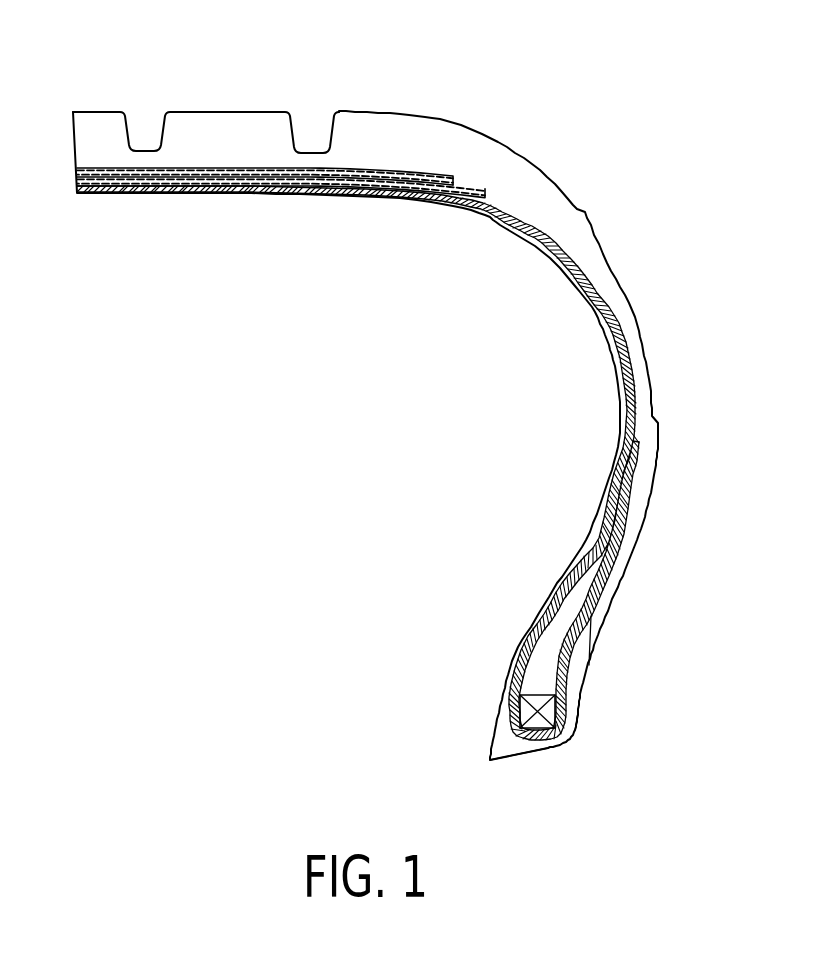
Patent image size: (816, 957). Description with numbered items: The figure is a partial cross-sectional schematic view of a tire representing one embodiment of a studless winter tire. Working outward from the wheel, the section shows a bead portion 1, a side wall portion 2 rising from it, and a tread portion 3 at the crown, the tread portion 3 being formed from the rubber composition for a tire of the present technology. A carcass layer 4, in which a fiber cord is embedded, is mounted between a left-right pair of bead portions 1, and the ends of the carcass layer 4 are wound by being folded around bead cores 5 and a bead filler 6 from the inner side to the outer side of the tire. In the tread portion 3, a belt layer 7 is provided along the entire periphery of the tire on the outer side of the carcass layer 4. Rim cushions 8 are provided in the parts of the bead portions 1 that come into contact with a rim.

The bead portion 1 is at (594, 731).
The side wall portion 2 is at (667, 413).
The tread portion 3 is at (207, 93).
The carcass layer 4 is at (617, 321).
The bead core 5 is at (523, 713).
The bead filler 6 is at (552, 650).
The belt layer 7 is at (466, 187).
The rim cushion 8 is at (532, 742).